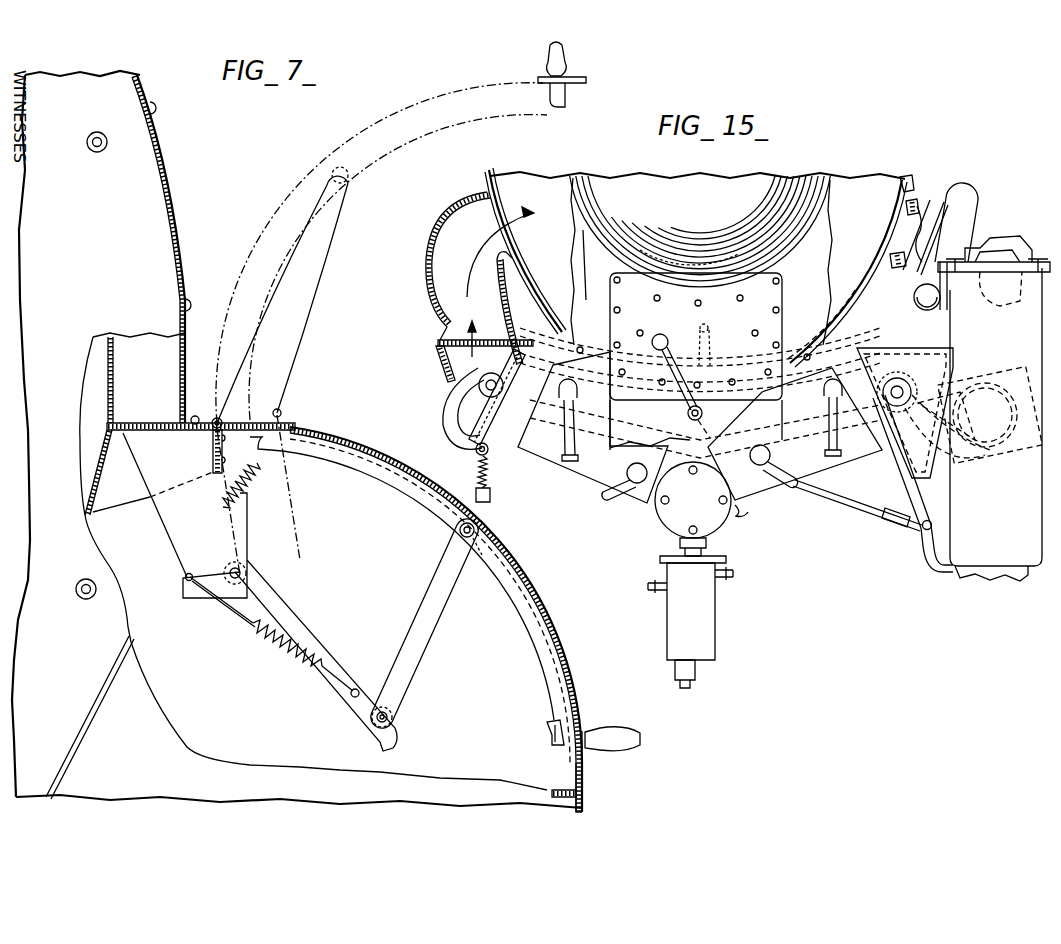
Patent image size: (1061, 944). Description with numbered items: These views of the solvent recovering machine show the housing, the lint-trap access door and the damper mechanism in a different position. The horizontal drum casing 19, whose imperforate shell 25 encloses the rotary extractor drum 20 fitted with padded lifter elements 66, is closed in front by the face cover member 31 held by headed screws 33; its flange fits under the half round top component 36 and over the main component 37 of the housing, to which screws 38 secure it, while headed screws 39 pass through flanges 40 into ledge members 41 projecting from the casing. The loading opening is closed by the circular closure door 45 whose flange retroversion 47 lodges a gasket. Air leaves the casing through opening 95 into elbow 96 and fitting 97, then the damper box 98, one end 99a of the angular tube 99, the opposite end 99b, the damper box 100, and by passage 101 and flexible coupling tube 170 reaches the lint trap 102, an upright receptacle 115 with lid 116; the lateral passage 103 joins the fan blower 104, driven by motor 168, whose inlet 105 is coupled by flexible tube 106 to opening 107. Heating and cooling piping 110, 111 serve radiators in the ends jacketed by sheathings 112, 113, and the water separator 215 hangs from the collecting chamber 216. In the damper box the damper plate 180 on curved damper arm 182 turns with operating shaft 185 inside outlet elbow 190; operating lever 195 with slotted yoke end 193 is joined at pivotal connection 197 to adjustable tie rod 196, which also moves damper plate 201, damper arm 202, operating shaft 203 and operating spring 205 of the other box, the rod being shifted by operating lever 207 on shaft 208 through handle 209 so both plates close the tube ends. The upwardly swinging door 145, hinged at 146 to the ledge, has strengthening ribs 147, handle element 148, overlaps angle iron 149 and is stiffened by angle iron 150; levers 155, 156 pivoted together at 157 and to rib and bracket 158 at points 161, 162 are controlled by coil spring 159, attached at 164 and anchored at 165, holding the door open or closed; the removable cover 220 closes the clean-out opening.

In FIG. 7, the drum casing 19 is at (120, 358).
In FIG. 15, the drum casing 19 is at (532, 356).
In FIG. 15, the rotary extractor drum 20 is at (530, 258).
In FIG. 7, the imperforate shell 25 is at (106, 455).
In FIG. 15, the imperforate shell 25 is at (880, 275).
In FIG. 7, the face cover member 31 is at (155, 218).
In FIG. 15, the face cover member 31 is at (582, 279).
In FIG. 7, the headed screws 33 is at (97, 131).
In FIG. 7, the half round top component 36 is at (170, 160).
In FIG. 7, the main component of machine housing 37 is at (592, 775).
In FIG. 7, the screws 38 is at (158, 108).
In FIG. 7, the headed screws 39 is at (195, 416).
In FIG. 7, the flanges 40 is at (197, 431).
In FIG. 7, the ledge members 41 is at (180, 420).
In FIG. 15, the circular closure door 45 is at (697, 310).
In FIG. 15, the outward retroversion 47 is at (585, 228).
In FIG. 15, the lifter elements 66 is at (714, 328).
In FIG. 15, the opening 95 is at (490, 211).
In FIG. 15, the elbow 96 is at (428, 266).
In FIG. 15, the fitting 97 is at (404, 336).
In FIG. 15, the damper box 98 is at (420, 352).
In FIG. 15, the angular tube 99 is at (753, 518).
In FIG. 15, the end of tube 99a is at (593, 427).
In FIG. 15, the end of tube 99b is at (795, 434).
In FIG. 15, the damper box 100 is at (905, 353).
In FIG. 15, the passage 101 is at (920, 378).
In FIG. 15, the lint trap 102 is at (930, 552).
In FIG. 15, the lateral passage 103 is at (913, 302).
In FIG. 15, the fan blower 104 is at (963, 201).
In FIG. 15, the inlet 105 is at (925, 283).
In FIG. 15, the flexible coupling tube 106 is at (912, 205).
In FIG. 15, the opening 107 is at (900, 230).
In FIG. 15, the piping 110 is at (578, 453).
In FIG. 15, the piping 111 is at (828, 455).
In FIG. 15, the sheathing 112 is at (582, 472).
In FIG. 15, the sheathing 113 is at (786, 482).
In FIG. 15, the cylindrical receptacle 115 is at (962, 521).
In FIG. 15, the removable lid 116 is at (996, 284).
In FIG. 7, the upwardly swinging door 145 is at (548, 573).
In FIG. 7, the hinge attachment 146 is at (222, 421).
In FIG. 7, the strengthening ribs 147 is at (316, 458).
In FIG. 7, the handle element 148 is at (641, 738).
In FIG. 7, the angle iron 149 is at (570, 774).
In FIG. 7, the angle iron 150 is at (547, 736).
In FIG. 7, the lever 155 is at (312, 640).
In FIG. 7, the lever 156 is at (428, 588).
In FIG. 7, the pivot 157 is at (394, 712).
In FIG. 7, the bracket 158 is at (172, 540).
In FIG. 7, the coil spring 159 is at (262, 650).
In FIG. 7, the pivot point 161 is at (458, 529).
In FIG. 7, the pivot point 162 is at (244, 570).
In FIG. 7, the pivot attachment 164 is at (358, 688).
In FIG. 7, the anchor point 165 is at (183, 580).
In FIG. 15, the drive motor 168 is at (997, 248).
In FIG. 15, the flexible coupling tube 170 is at (961, 385).
In FIG. 15, the damper plate 180 is at (884, 366).
In FIG. 15, the curved damper arm 182 is at (985, 415).
In FIG. 15, the operating shaft 185 is at (940, 480).
In FIG. 15, the outlet elbow 190 is at (1010, 396).
In FIG. 15, the slotted yoke end 193 is at (934, 532).
In FIG. 7, the operating lever 195 is at (438, 89).
In FIG. 15, the operating lever 195 is at (905, 499).
In FIG. 15, the adjustable tie rod 196 is at (845, 497).
In FIG. 15, the pivotal connection 197 is at (920, 532).
In FIG. 15, the damper plate 201 is at (518, 362).
In FIG. 15, the damper arm 202 is at (441, 416).
In FIG. 15, the operating shaft 203 is at (490, 456).
In FIG. 15, the operating spring 205 is at (492, 491).
In FIG. 15, the operating lever 207 is at (715, 432).
In FIG. 15, the shaft 208 is at (704, 413).
In FIG. 15, the handle 209 is at (660, 334).
In FIG. 15, the water separator 215 is at (730, 595).
In FIG. 15, the collecting chamber 216 is at (660, 527).
In FIG. 15, the removable cover 220 is at (782, 300).